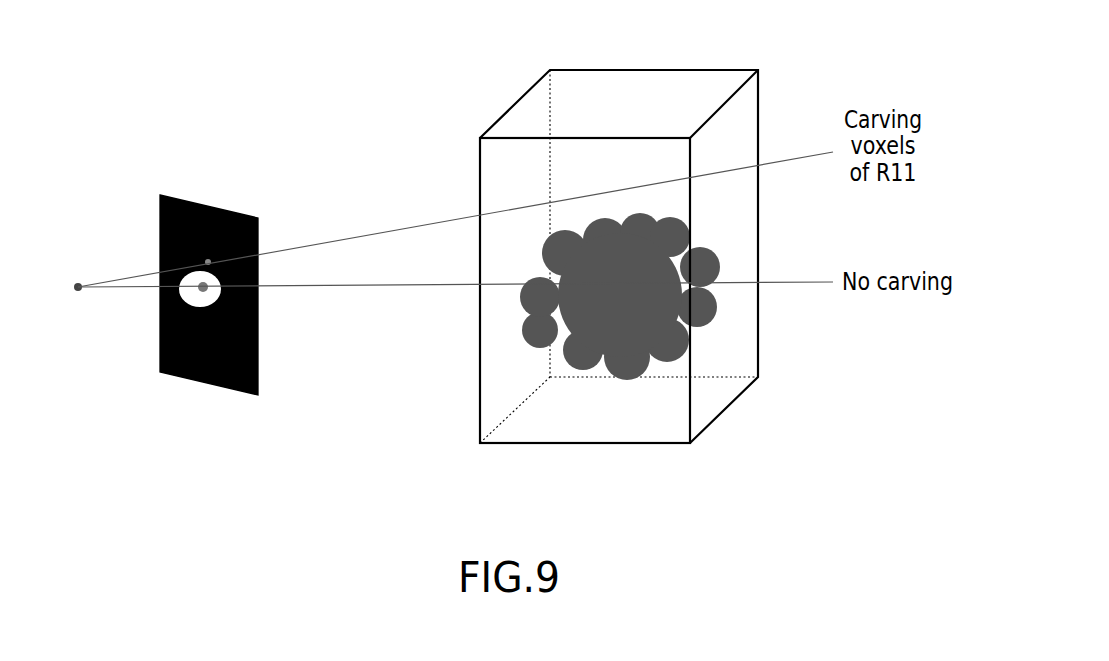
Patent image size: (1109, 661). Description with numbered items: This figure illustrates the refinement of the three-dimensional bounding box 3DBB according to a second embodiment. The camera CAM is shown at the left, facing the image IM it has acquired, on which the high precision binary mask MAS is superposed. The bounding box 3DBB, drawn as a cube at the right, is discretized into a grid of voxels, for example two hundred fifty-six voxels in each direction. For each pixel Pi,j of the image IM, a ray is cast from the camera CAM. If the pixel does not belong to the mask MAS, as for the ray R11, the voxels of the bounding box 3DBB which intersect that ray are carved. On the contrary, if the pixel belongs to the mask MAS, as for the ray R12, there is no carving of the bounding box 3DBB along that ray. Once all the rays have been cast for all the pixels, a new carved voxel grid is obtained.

The 3D bounding box 3DBB is at (760, 95).
The image IM is at (220, 208).
The pixel Pi,j is at (205, 245).
The binary mask MAS is at (213, 308).
The camera CAM is at (71, 269).
The ray R11 is at (455, 219).
The ray R12 is at (455, 306).